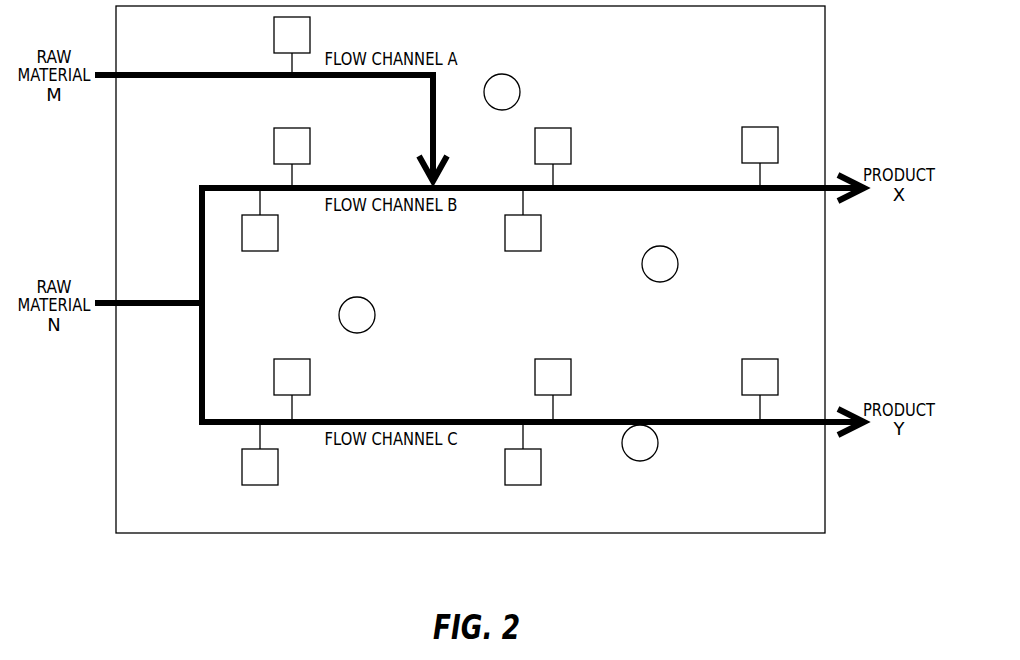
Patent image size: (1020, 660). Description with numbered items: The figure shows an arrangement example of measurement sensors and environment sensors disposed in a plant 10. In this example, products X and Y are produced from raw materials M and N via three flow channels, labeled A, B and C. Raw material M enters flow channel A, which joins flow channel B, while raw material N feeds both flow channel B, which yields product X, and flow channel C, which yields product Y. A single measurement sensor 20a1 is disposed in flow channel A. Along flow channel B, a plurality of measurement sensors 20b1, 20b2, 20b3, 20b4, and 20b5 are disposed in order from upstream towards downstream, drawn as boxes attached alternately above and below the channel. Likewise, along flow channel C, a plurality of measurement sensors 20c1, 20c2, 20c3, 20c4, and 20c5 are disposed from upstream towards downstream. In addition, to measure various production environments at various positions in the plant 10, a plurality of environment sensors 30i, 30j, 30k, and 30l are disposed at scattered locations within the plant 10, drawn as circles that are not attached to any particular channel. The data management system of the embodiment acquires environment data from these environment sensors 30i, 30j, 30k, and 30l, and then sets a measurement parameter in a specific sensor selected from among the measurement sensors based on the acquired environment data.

The plant 10 is at (153, 519).
The measurement sensor 20a1 is at (273, 32).
The measurement sensor 20b1 is at (278, 234).
The measurement sensor 20b2 is at (273, 143).
The measurement sensor 20b3 is at (541, 234).
The measurement sensor 20b4 is at (535, 143).
The measurement sensor 20b5 is at (742, 143).
The measurement sensor 20c1 is at (278, 468).
The measurement sensor 20c2 is at (274, 373).
The measurement sensor 20c3 is at (541, 468).
The measurement sensor 20c4 is at (535, 373).
The measurement sensor 20c5 is at (742, 374).
The environment sensor 30i is at (519, 97).
The environment sensor 30j is at (677, 269).
The environment sensor 30k is at (374, 320).
The environment sensor 30l is at (657, 448).